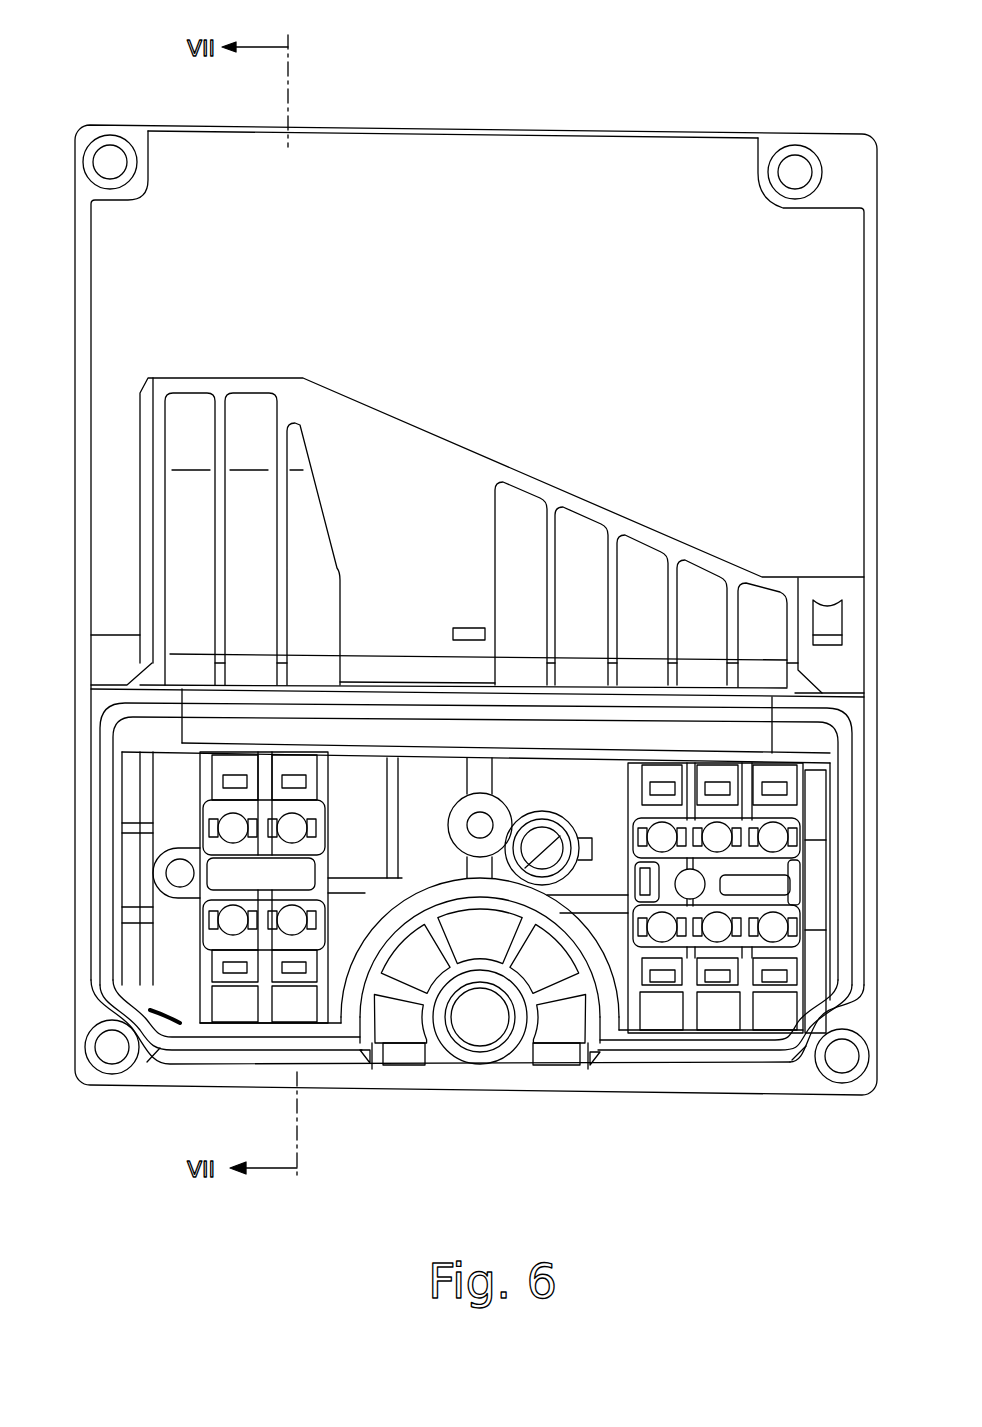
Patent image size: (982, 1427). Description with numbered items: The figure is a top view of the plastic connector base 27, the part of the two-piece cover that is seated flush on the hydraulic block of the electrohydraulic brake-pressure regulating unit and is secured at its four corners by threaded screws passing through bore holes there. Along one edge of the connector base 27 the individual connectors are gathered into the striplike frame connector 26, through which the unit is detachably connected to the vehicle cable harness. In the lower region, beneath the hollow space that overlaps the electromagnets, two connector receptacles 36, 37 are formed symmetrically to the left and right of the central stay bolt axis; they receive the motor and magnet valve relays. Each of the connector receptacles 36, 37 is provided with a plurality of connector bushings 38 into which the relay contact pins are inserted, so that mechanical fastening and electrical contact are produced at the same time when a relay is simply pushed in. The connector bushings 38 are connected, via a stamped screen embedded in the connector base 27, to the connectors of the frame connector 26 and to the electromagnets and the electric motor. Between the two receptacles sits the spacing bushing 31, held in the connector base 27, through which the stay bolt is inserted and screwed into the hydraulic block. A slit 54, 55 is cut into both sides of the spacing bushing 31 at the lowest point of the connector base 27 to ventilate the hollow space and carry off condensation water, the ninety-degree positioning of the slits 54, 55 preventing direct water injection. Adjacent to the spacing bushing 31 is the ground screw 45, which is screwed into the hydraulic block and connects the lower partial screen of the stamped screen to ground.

The connector base 27 is at (580, 165).
The frame connector 26 is at (658, 515).
The connector receptacle 36 is at (198, 958).
The connector receptacle 37 is at (766, 960).
The connector bushings 38 is at (220, 828).
The spacing bushing 31 is at (492, 1037).
The slit 54 is at (402, 1052).
The slit 55 is at (557, 1057).
The ground screw 45 is at (557, 863).